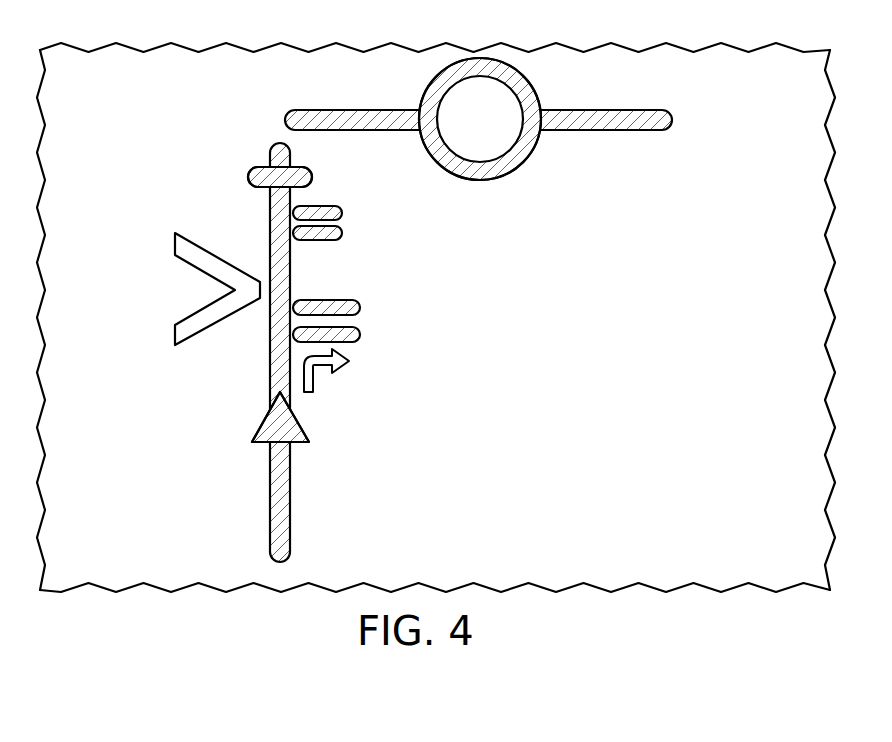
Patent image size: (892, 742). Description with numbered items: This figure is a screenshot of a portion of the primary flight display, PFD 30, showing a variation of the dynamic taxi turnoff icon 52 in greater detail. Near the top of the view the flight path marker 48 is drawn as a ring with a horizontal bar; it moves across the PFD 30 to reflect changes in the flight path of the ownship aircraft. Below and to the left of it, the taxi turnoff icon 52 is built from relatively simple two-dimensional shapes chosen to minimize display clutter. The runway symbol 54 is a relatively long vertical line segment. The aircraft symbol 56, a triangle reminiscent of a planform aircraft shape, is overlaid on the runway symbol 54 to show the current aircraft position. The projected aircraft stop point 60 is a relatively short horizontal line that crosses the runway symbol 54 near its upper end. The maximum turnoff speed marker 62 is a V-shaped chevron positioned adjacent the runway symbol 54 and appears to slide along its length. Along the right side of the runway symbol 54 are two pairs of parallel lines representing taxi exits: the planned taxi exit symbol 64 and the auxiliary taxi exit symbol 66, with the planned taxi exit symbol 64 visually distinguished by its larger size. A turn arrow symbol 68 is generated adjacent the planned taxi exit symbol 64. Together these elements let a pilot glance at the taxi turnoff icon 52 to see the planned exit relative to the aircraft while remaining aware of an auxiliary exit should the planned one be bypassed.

The primary flight display (PFD) 30 is at (103, 101).
The flight path marker 48 is at (618, 130).
The dynamic taxi turnoff icon 52 is at (208, 207).
The runway symbol 54 is at (290, 513).
The aircraft symbol 56 is at (263, 421).
The projected aircraft stop point 60 is at (312, 178).
The maximum turnoff speed marker 62 is at (175, 336).
The planned taxi exit symbol 64 is at (360, 335).
The auxiliary taxi exit symbol 66 is at (342, 233).
The turn arrow symbol 68 is at (313, 377).